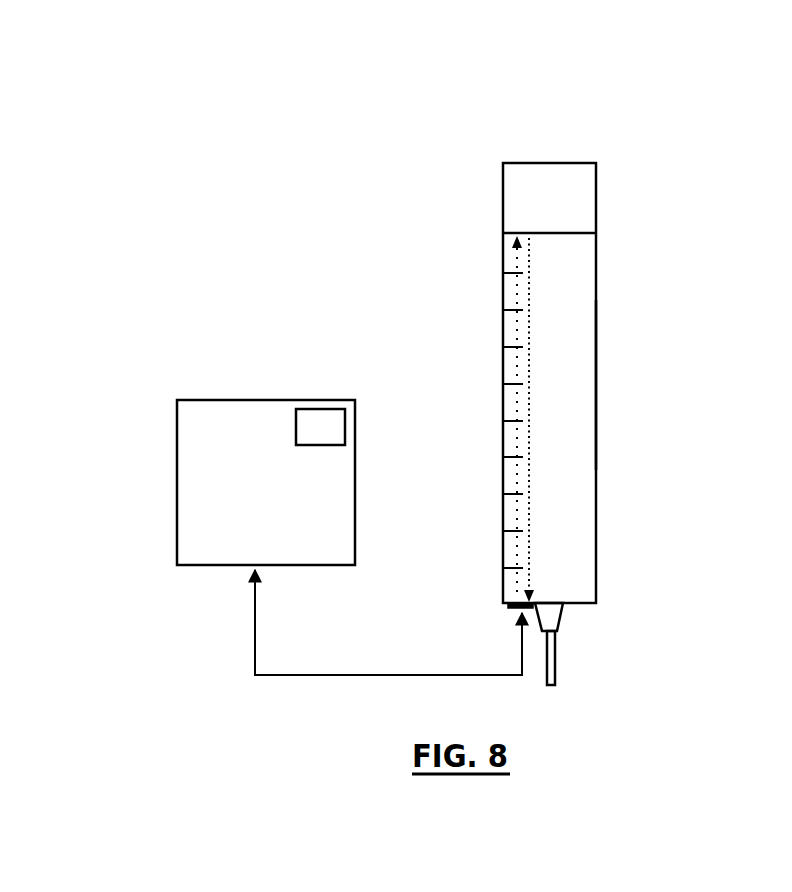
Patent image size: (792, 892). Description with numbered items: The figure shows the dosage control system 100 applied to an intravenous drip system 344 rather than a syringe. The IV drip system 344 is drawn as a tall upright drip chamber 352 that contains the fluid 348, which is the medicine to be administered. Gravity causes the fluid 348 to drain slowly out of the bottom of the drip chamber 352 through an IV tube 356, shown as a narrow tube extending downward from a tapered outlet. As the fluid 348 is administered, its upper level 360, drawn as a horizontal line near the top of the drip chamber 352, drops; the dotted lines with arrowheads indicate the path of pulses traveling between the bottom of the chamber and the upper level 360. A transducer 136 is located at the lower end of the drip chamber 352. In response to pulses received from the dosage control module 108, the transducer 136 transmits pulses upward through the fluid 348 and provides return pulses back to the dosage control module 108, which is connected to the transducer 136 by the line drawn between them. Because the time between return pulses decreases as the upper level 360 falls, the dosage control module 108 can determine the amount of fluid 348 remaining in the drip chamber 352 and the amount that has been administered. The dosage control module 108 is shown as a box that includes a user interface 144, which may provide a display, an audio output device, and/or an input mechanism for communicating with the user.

The dosage control system 100 is at (160, 150).
The dosage control module 108 is at (266, 400).
The user interface 144 is at (345, 426).
The IV drip system 344 is at (659, 176).
The upper level 360 is at (538, 233).
The drip chamber 352 is at (596, 383).
The fluid 348 is at (555, 483).
The IV tube 356 is at (555, 664).
The transducer 136 is at (512, 611).